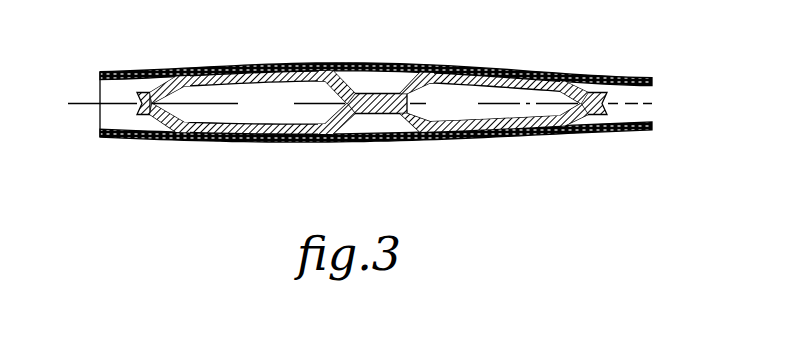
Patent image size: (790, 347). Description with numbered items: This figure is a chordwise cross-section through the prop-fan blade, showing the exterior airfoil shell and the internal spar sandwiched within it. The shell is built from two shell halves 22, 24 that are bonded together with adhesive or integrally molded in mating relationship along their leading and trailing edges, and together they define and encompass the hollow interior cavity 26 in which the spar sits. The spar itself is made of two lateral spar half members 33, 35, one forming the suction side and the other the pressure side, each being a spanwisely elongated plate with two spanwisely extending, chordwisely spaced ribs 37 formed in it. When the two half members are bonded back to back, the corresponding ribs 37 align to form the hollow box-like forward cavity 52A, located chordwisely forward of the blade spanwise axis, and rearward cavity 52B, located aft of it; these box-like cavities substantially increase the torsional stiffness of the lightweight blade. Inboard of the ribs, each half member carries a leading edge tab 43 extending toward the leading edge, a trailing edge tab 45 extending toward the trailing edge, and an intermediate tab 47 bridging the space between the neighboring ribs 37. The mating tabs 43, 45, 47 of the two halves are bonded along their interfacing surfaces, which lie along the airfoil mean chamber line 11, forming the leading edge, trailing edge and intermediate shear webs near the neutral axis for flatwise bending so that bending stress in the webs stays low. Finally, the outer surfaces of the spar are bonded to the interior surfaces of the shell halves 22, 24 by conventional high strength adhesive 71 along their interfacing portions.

The airfoil mean chamber line 11 is at (83, 104).
The shell half 22 is at (608, 78).
The shell half 24 is at (618, 133).
The hollow interior cavity 26 is at (120, 92).
The spar half member 33 is at (400, 93).
The spar half member 35 is at (343, 130).
The ribs 37 is at (265, 63).
The leading edge tab 43 is at (150, 115).
The trailing edge tab 45 is at (600, 80).
The intermediate tab 47 is at (373, 113).
The high strength adhesive 71 is at (535, 135).
The forward cavity 52A is at (290, 115).
The rearward cavity 52B is at (473, 116).